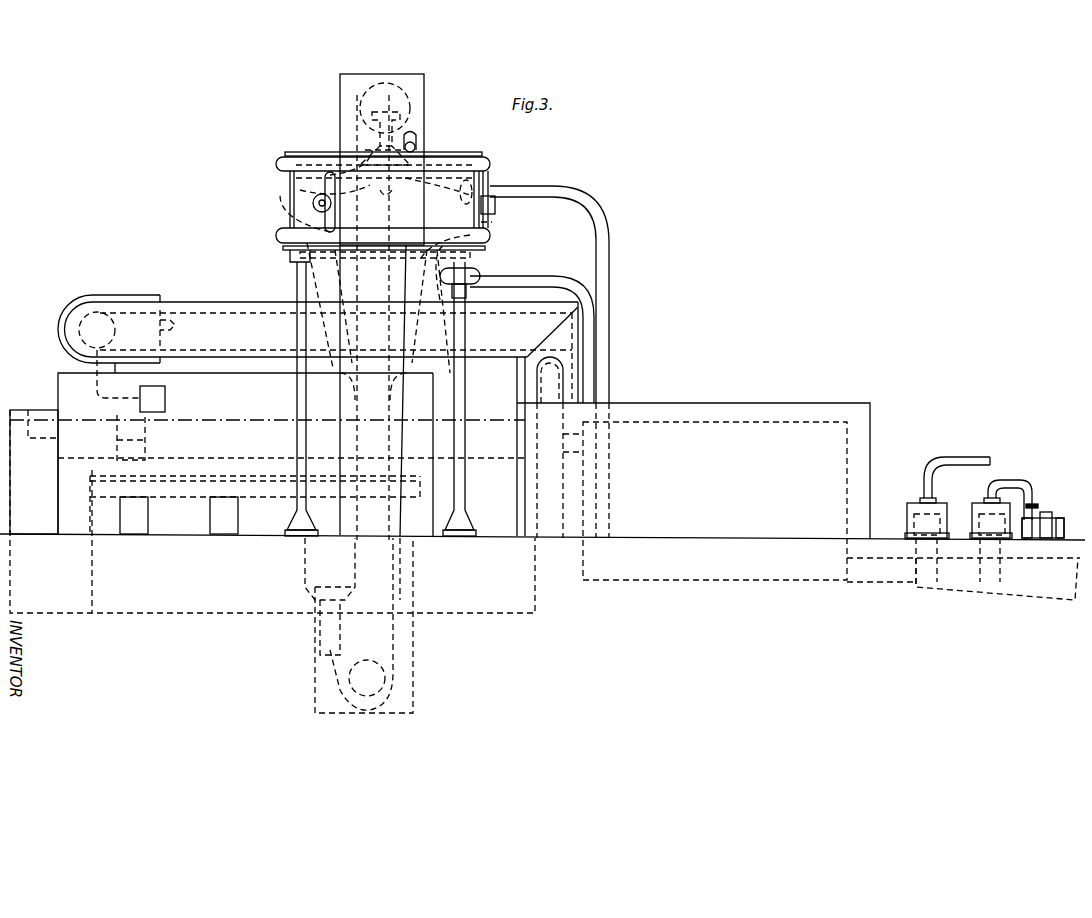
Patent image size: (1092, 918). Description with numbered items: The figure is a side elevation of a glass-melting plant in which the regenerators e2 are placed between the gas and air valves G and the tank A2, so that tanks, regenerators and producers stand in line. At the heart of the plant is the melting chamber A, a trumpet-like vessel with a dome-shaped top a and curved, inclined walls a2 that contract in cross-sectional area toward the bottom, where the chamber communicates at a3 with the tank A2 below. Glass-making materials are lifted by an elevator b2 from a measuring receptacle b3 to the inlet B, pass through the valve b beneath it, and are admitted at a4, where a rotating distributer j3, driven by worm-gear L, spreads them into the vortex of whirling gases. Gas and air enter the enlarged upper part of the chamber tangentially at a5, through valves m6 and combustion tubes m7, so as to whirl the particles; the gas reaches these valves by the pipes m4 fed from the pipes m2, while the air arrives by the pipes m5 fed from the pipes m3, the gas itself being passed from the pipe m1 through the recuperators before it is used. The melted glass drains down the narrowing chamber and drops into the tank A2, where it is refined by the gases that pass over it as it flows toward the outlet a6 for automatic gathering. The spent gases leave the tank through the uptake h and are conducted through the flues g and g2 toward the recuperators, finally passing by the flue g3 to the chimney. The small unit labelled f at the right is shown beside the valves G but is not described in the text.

The inlet B is at (372, 125).
The elevator b2 is at (408, 102).
The worm-gear L is at (400, 118).
The valve b is at (418, 140).
The admission point for glass-making materials a4 is at (372, 160).
The air pipes m5 is at (280, 163).
The gas pipes m4 is at (280, 234).
The melting chamber A is at (312, 208).
The distributer j3 is at (381, 206).
The dome-shaped top a is at (424, 180).
The gas and air entry points a5 is at (460, 200).
The curved and inclined walls a2 is at (280, 286).
The valves m6 is at (496, 206).
The combustion tubes m7 is at (492, 226).
The air pipes from recuperators m3 is at (610, 228).
The gas pipes from recuperators m2 is at (500, 285).
The flue g is at (82, 331).
The flues g2 is at (535, 388).
The uptake h is at (90, 387).
The outlet a6 is at (40, 430).
The tank A2 is at (267, 448).
The outlet of melting chamber a3 is at (373, 386).
The regenerators e2 is at (693, 468).
The measuring receptacle b3 is at (308, 564).
The gas pipe m1 is at (872, 578).
The flue to chimney g3 is at (1040, 588).
The gas and air valve G is at (912, 524).
The motor f is at (1040, 514).